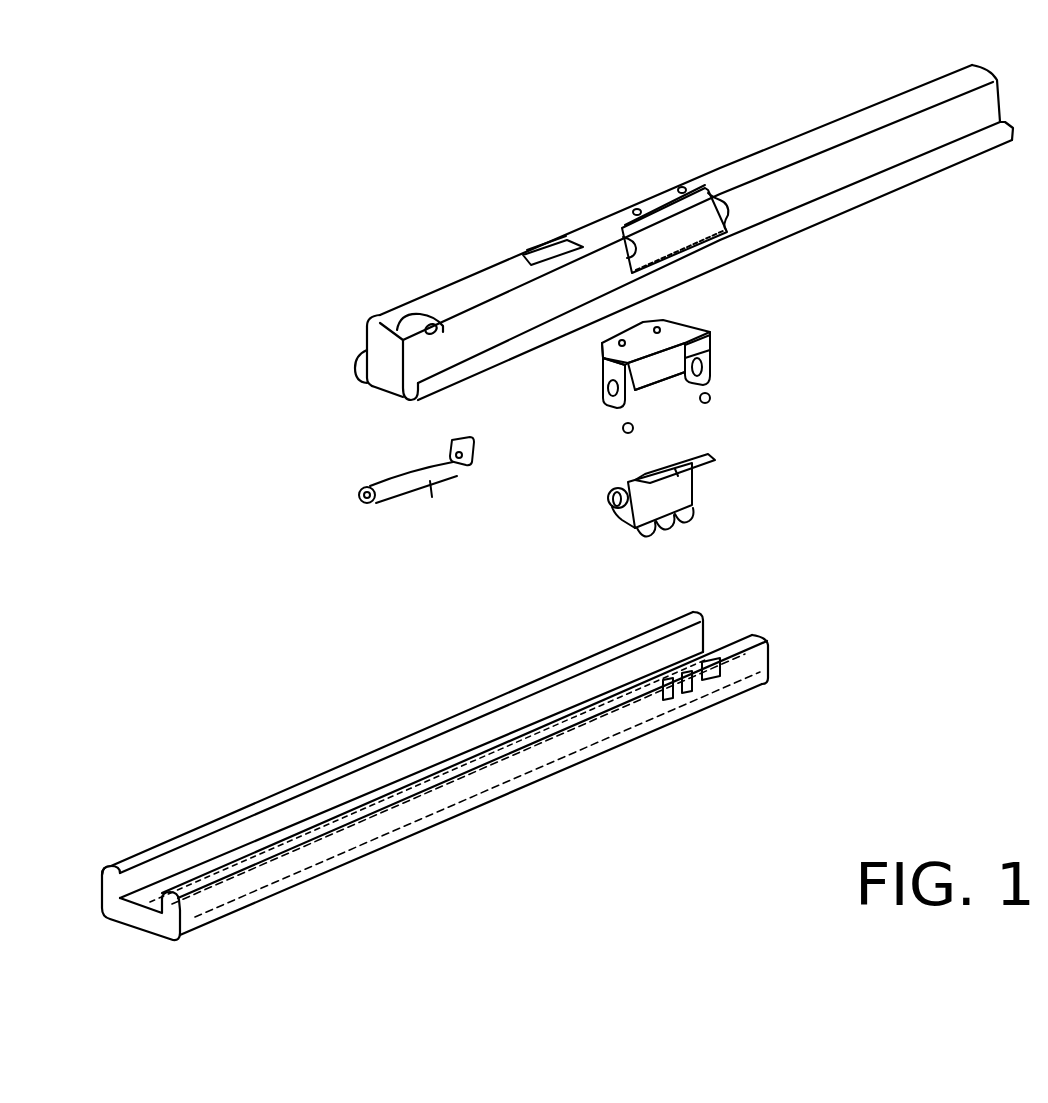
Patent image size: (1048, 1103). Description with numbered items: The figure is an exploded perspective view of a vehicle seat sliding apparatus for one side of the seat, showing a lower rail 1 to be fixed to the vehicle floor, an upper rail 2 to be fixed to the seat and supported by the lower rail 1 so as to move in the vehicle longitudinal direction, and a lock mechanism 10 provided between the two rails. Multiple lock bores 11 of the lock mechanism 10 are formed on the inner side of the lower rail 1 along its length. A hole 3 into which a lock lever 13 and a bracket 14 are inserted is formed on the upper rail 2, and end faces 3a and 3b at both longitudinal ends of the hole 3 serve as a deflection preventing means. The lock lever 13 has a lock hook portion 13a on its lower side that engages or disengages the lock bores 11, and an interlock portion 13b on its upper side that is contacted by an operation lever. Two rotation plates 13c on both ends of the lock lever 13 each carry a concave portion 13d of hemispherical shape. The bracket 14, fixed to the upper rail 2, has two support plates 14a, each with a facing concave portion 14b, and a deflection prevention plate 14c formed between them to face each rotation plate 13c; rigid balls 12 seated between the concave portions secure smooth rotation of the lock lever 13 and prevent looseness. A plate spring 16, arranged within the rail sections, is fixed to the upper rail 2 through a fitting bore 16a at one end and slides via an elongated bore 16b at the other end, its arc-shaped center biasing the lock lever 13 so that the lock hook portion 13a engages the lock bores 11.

The lower rail 1 is at (755, 672).
The upper rail 2 is at (931, 95).
The hole 3 is at (658, 218).
The end face 3a is at (632, 258).
The end face 3b is at (730, 203).
The lock mechanism 10 is at (920, 358).
The lock bores 11 is at (745, 643).
The ball 12 is at (711, 396).
The lock lever 13 is at (733, 492).
The lock hook portion 13a is at (690, 533).
The interlock portion 13b is at (712, 460).
The rotation plate 13c is at (620, 518).
The concave portion 13d is at (607, 498).
The bracket 14 is at (718, 303).
The support plate 14a is at (710, 331).
The concave portion 14b is at (713, 356).
The deflection prevention plate 14c is at (662, 367).
The plate spring 16 is at (433, 492).
The fitting bore 16a is at (368, 505).
The elongated bore 16b is at (466, 466).